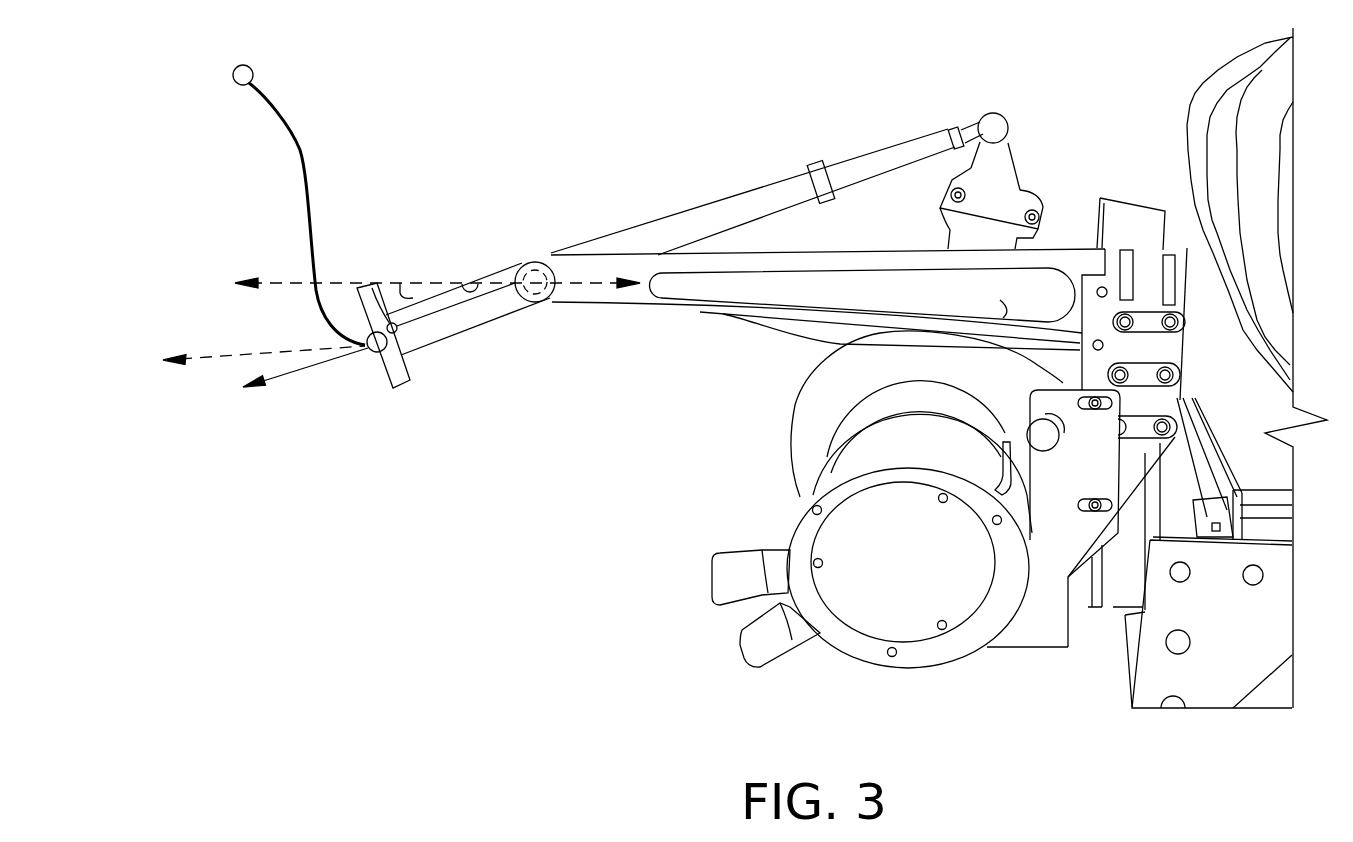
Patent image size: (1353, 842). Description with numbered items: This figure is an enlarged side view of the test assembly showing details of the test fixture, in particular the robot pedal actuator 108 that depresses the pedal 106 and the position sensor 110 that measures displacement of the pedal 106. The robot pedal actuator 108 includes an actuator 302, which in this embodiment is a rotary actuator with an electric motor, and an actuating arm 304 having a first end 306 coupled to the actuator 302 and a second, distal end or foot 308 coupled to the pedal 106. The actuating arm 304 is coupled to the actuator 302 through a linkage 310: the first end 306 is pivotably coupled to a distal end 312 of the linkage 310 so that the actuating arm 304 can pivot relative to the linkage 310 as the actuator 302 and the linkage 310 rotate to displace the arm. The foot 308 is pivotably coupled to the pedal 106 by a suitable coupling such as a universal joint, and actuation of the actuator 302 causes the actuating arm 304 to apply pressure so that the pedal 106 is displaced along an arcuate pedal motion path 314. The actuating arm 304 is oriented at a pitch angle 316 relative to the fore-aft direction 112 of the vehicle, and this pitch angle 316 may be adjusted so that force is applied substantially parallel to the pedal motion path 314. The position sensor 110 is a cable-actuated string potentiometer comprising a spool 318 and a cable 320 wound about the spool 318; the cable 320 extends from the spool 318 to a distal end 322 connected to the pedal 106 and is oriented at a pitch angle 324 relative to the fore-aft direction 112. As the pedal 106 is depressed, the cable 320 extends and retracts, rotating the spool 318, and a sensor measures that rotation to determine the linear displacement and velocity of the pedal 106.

The pedal 106 is at (385, 379).
The robot pedal actuator 108 is at (846, 693).
The position sensor 110 is at (551, 319).
The fore-aft direction 112 is at (592, 283).
The actuator 302 is at (737, 505).
The actuating arm 304 is at (800, 133).
The first end 306 is at (985, 115).
The second end or foot 308 is at (408, 356).
The linkage 310 is at (1020, 186).
The distal end of the linkage 312 is at (1013, 133).
The pedal motion path 314 is at (205, 357).
The pitch angle 316 is at (404, 292).
The spool 318 is at (545, 262).
The cable 320 is at (447, 311).
The distal end of the cable 322 is at (372, 289).
The pitch angle 324 is at (465, 283).